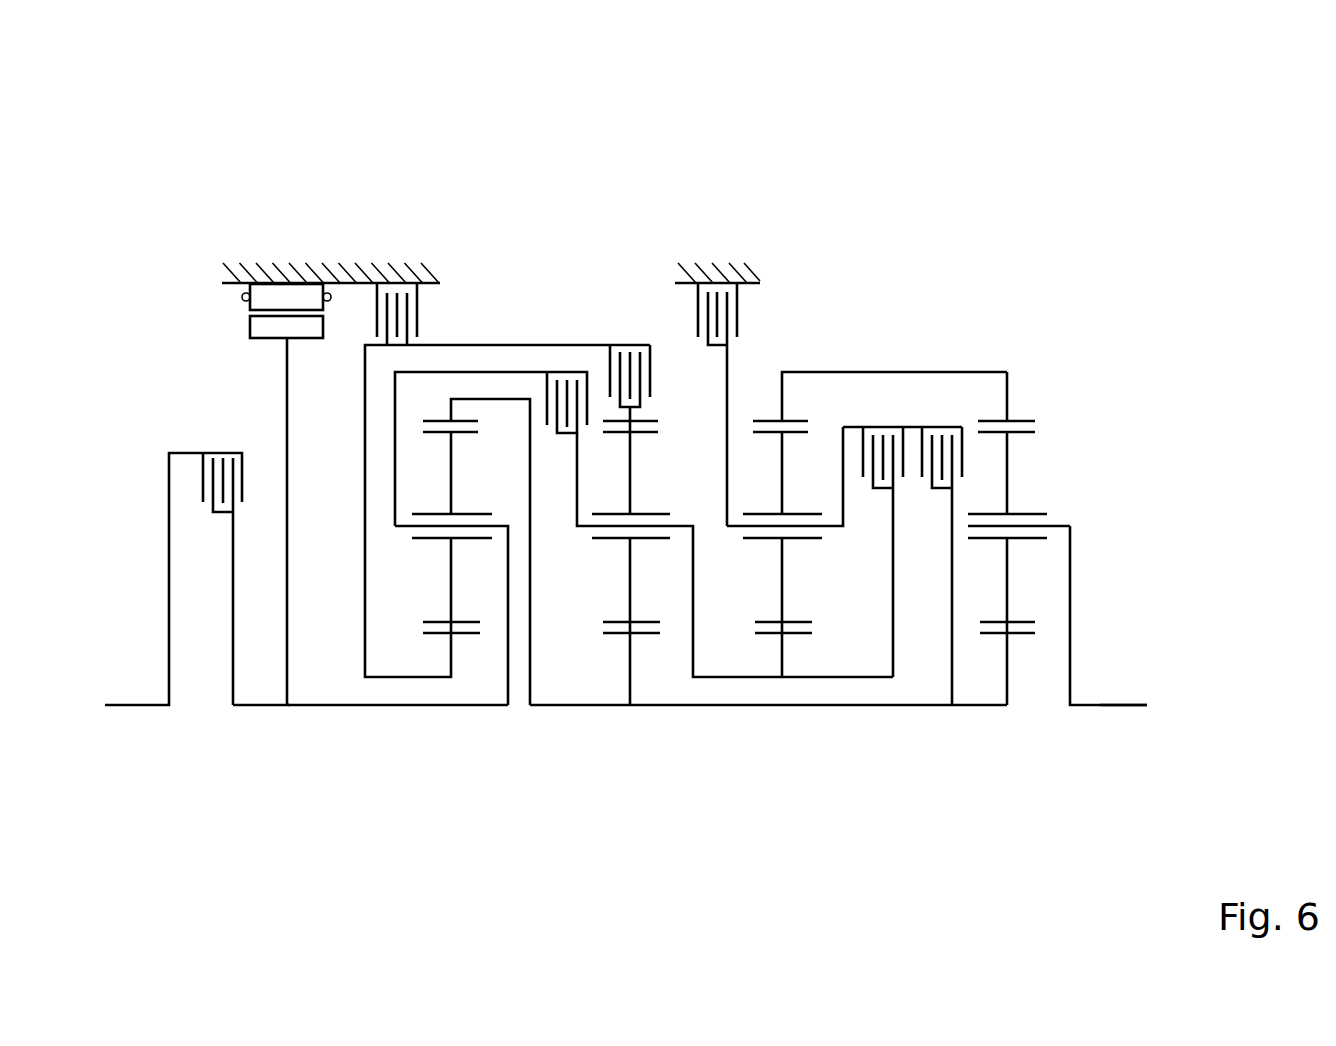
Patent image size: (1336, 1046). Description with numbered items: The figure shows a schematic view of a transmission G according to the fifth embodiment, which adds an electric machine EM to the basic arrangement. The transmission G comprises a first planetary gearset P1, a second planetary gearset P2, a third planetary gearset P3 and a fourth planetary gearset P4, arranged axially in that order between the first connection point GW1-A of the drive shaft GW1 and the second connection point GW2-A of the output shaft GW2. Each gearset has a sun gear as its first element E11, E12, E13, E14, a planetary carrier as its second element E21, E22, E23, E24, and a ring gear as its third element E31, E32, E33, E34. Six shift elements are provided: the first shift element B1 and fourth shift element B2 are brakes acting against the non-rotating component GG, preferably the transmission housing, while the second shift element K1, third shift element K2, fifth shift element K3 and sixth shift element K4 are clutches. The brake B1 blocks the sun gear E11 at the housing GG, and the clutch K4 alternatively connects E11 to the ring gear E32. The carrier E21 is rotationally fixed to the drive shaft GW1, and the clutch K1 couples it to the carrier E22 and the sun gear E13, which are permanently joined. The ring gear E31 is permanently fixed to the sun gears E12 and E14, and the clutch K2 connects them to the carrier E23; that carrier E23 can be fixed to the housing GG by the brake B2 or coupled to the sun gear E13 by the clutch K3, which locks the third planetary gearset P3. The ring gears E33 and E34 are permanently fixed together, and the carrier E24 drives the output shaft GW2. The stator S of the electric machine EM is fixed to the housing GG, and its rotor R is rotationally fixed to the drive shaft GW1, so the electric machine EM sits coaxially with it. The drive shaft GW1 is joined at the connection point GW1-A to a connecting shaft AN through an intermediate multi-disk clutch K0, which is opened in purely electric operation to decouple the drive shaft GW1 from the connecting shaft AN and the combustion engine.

The transmission G is at (277, 163).
The non-rotating component GG is at (407, 271).
The electric machine EM is at (236, 311).
The stator S is at (246, 297).
The rotor R is at (261, 327).
The first shift element B1 is at (424, 313).
The fourth shift element B2 is at (744, 319).
The intermediate clutch K0 is at (198, 483).
The second shift element K1 is at (564, 365).
The third shift element K2 is at (941, 416).
The fifth shift element K3 is at (882, 416).
The sixth shift element K4 is at (626, 332).
The connecting shaft AN is at (138, 703).
The drive shaft GW1 is at (343, 707).
The first connection point GW1-A is at (225, 705).
The output shaft GW2 is at (1113, 704).
The second connection point GW2-A is at (1152, 703).
The first planetary gearset P1 is at (453, 714).
The second planetary gearset P2 is at (632, 714).
The third planetary gearset P3 is at (783, 714).
The fourth planetary gearset P4 is at (1007, 714).
The first element of the first planetary gearset E11 is at (450, 655).
The second element of the first planetary gearset E21 is at (497, 530).
The third element of the first planetary gearset E31 is at (450, 412).
The first element of the second planetary gearset E12 is at (632, 668).
The second element of the second planetary gearset E22 is at (680, 530).
The third element of the second planetary gearset E32 is at (633, 416).
The first element of the third planetary gearset E13 is at (785, 658).
The second element of the third planetary gearset E23 is at (828, 530).
The third element of the third planetary gearset E33 is at (785, 402).
The first element of the fourth planetary gearset E14 is at (1007, 668).
The second element of the fourth planetary gearset E24 is at (1055, 524).
The third element of the fourth planetary gearset E34 is at (1010, 396).